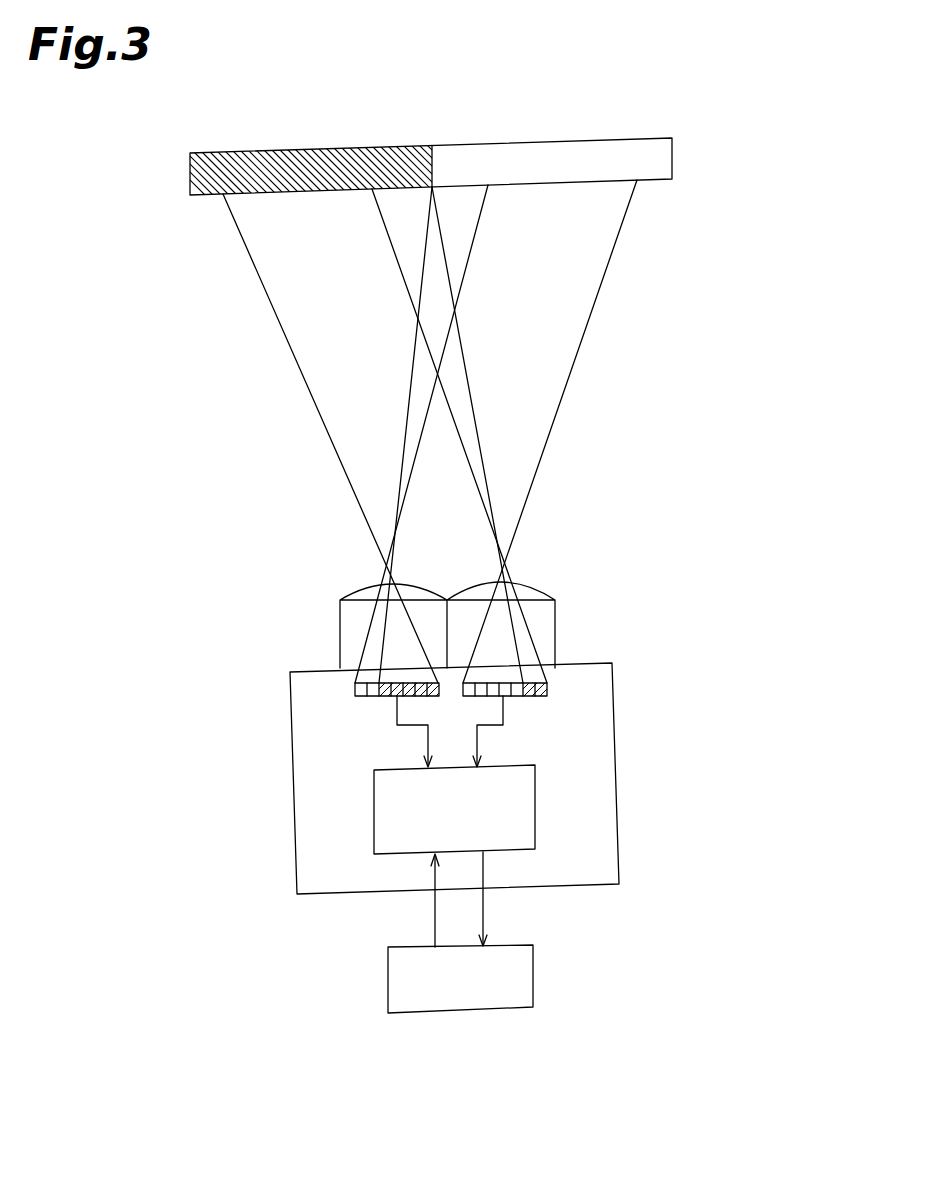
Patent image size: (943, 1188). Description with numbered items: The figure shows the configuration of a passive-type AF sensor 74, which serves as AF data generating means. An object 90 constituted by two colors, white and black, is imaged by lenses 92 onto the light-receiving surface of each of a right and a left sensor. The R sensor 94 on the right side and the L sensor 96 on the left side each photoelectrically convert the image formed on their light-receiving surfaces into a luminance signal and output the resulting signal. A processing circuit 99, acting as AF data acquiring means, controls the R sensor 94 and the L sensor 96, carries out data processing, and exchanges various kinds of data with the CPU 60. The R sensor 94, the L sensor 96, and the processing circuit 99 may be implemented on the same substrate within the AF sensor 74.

The object 90 is at (694, 145).
The lenses 92 is at (362, 592).
The R sensor 94 is at (555, 686).
The L sensor 96 is at (347, 693).
The processing circuit 99 is at (374, 828).
The AF sensor 74 is at (629, 819).
The CPU 60 is at (533, 973).